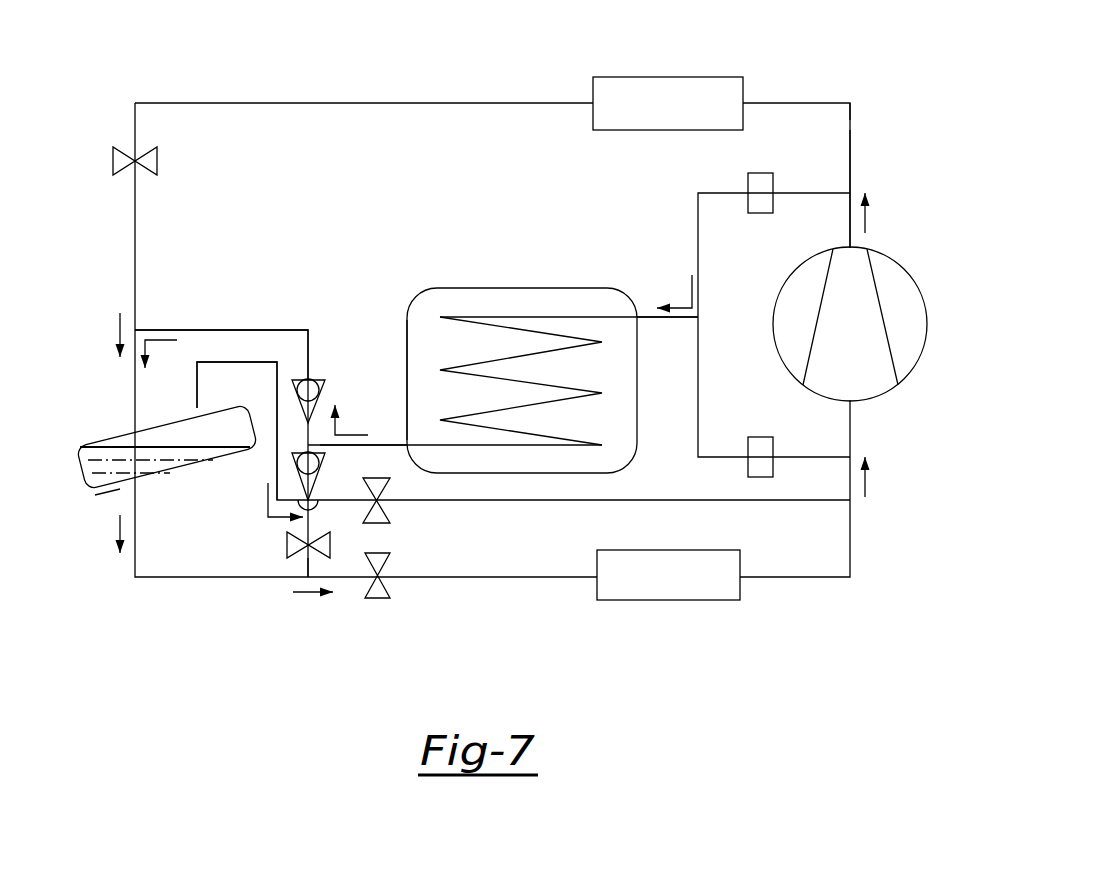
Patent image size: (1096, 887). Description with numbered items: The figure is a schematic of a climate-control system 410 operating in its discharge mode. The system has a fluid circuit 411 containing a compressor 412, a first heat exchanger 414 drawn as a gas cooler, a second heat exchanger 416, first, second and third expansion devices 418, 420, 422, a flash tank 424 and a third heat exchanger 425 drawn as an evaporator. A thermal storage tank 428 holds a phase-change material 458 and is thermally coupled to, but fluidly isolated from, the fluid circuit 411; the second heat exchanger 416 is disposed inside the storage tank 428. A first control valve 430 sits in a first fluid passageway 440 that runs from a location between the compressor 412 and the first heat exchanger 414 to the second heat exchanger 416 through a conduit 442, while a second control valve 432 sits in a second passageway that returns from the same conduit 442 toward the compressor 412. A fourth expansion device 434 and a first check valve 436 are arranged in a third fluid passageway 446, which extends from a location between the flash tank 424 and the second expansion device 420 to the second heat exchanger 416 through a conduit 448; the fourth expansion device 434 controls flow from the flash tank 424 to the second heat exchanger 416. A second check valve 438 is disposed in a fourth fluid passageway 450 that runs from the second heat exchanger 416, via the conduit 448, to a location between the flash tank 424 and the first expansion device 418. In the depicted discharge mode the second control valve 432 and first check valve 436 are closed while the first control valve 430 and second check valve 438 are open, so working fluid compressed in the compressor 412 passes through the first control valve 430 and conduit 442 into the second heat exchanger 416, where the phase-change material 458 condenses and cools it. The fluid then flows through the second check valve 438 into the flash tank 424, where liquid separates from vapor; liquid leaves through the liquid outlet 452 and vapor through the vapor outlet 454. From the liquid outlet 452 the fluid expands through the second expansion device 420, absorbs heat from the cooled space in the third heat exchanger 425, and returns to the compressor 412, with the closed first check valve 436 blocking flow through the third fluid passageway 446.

The climate-control system 410 is at (862, 82).
The fluid circuit 411 is at (857, 158).
The compressor 412 is at (920, 277).
The first heat exchanger 414 is at (668, 77).
The second heat exchanger 416 is at (535, 317).
The first expansion device 418 is at (113, 160).
The second expansion device 420 is at (375, 600).
The third expansion device 422 is at (391, 506).
The flash tank 424 is at (78, 438).
The third heat exchanger 425 is at (667, 603).
The thermal storage tank 428 is at (443, 278).
The first control valve 430 is at (757, 173).
The second control valve 432 is at (757, 437).
The fourth expansion device 434 is at (333, 545).
The first check valve 436 is at (298, 465).
The second check valve 438 is at (320, 390).
The first fluid passageway 440 is at (690, 212).
The conduit 442 is at (643, 317).
The third fluid passageway 446 is at (305, 565).
The conduit 448 is at (390, 445).
The fourth fluid passageway 450 is at (178, 328).
The liquid outlet 452 is at (197, 408).
The vapor outlet 454 is at (135, 485).
The phase-change material 458 is at (427, 323).